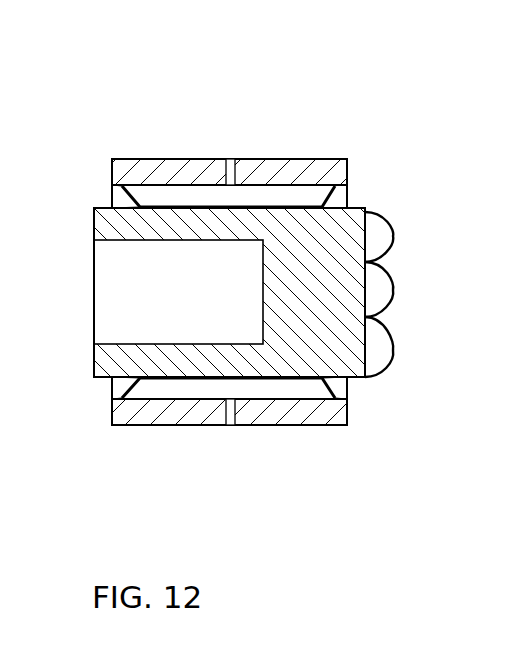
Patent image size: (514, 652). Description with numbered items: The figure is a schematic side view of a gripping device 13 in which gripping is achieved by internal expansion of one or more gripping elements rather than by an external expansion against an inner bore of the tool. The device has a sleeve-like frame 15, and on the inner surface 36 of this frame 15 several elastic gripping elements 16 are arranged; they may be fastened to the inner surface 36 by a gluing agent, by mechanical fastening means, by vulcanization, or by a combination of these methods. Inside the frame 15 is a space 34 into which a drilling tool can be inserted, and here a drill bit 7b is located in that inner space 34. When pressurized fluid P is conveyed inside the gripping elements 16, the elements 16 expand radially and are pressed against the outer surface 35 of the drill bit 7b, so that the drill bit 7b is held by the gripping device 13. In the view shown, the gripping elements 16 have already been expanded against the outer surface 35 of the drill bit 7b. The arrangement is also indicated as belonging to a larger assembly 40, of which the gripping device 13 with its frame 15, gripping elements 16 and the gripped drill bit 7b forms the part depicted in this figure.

The drill bit 7b is at (335, 238).
The sealing device 13 is at (146, 124).
The frame 15 is at (298, 159).
The elastic gripping elements 16 is at (187, 204).
The space 34 is at (340, 388).
The outer surface 35 is at (123, 378).
The inner surface 36 is at (110, 188).
The pressurized fluid P is at (231, 159).
The cylinder 40 is at (302, 8).